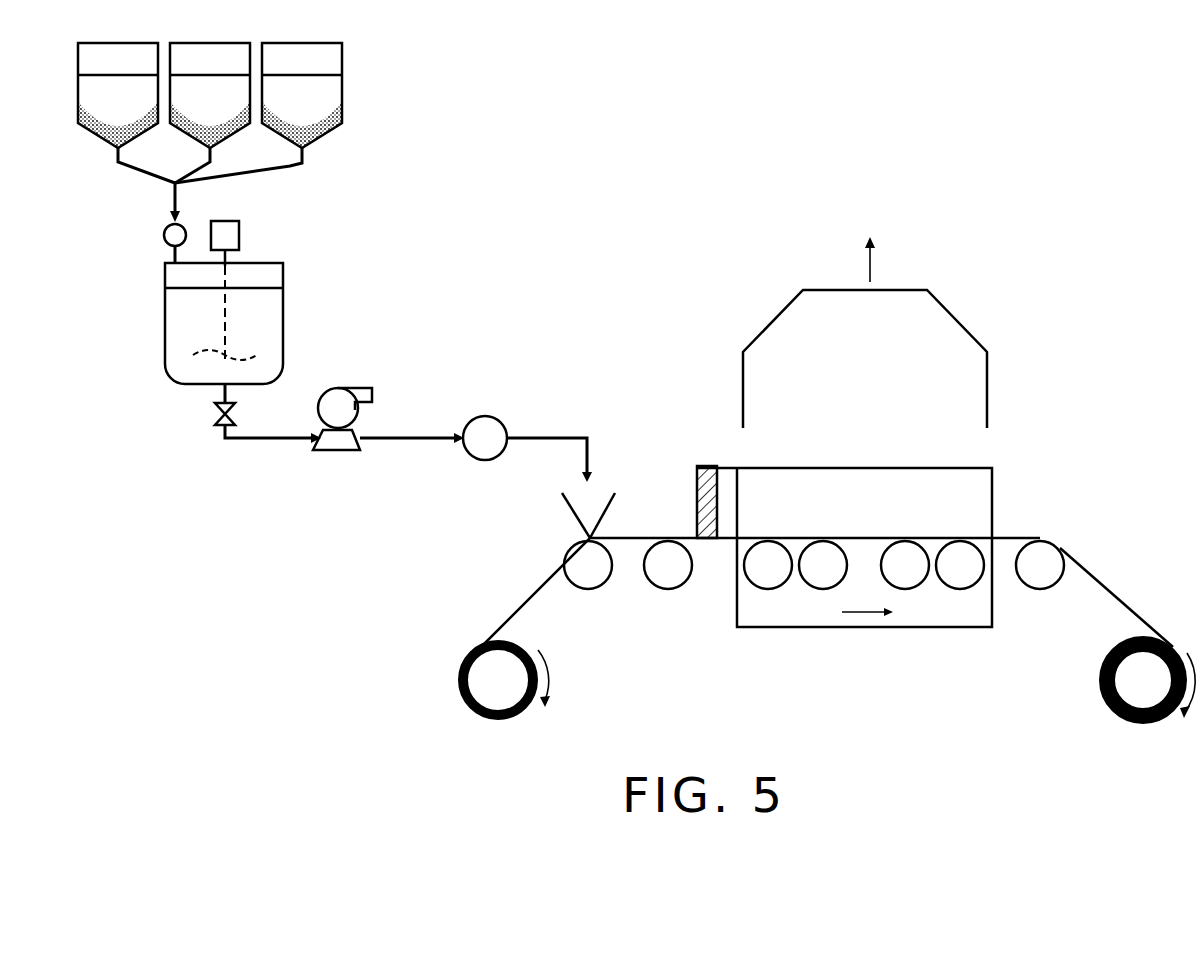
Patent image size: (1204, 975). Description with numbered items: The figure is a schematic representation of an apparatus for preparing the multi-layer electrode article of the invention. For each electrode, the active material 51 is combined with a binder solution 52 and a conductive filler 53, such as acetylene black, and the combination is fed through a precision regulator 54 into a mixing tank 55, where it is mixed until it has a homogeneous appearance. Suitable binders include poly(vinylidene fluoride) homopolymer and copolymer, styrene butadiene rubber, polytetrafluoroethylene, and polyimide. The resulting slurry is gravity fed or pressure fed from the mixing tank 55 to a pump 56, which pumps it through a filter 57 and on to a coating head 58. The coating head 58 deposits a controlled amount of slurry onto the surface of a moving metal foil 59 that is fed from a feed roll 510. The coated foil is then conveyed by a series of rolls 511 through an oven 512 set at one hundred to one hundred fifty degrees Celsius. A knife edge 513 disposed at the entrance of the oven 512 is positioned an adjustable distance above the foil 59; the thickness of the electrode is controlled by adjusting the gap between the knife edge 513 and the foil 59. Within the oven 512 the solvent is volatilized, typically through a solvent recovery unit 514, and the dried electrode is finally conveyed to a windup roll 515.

The active material 51 is at (118, 95).
The binder solution 52 is at (210, 95).
The conductive filler 53 is at (302, 95).
The precision regulator 54 is at (148, 239).
The mixing tank 55 is at (287, 307).
The pump 56 is at (348, 388).
The filter 57 is at (480, 417).
The coating head 58 is at (612, 437).
The metal foil 59 is at (527, 597).
The feed roll 510 is at (460, 690).
The rolls 511 is at (814, 565).
The oven 512 is at (844, 547).
The knife edge 513 is at (697, 484).
The solvent recovery unit 514 is at (990, 378).
The windup roll 515 is at (1100, 694).